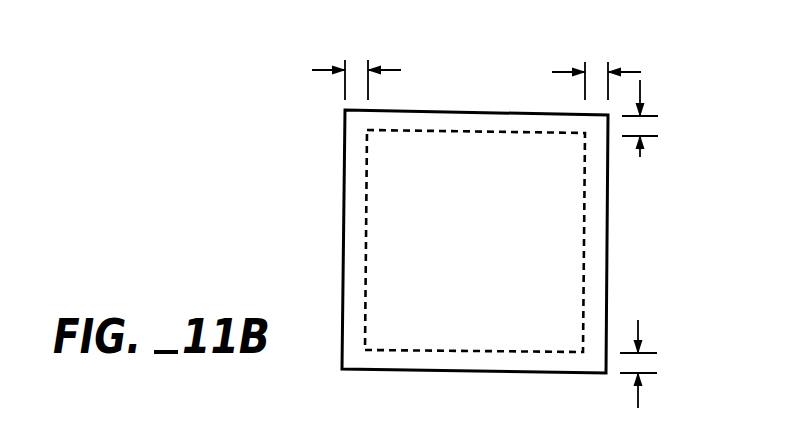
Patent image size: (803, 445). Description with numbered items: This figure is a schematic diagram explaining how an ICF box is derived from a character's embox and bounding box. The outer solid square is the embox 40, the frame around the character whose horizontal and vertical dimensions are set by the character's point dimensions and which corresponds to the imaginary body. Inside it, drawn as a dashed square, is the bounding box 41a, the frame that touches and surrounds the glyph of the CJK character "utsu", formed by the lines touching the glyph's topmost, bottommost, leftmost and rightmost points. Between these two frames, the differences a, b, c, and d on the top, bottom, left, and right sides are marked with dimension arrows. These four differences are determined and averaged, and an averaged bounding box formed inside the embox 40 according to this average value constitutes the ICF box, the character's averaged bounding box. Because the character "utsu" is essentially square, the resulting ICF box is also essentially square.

The embox 40 is at (418, 109).
The bounding box 41a is at (585, 247).
The difference a is at (356, 66).
The difference b is at (596, 66).
The difference c is at (654, 118).
The difference d is at (652, 364).